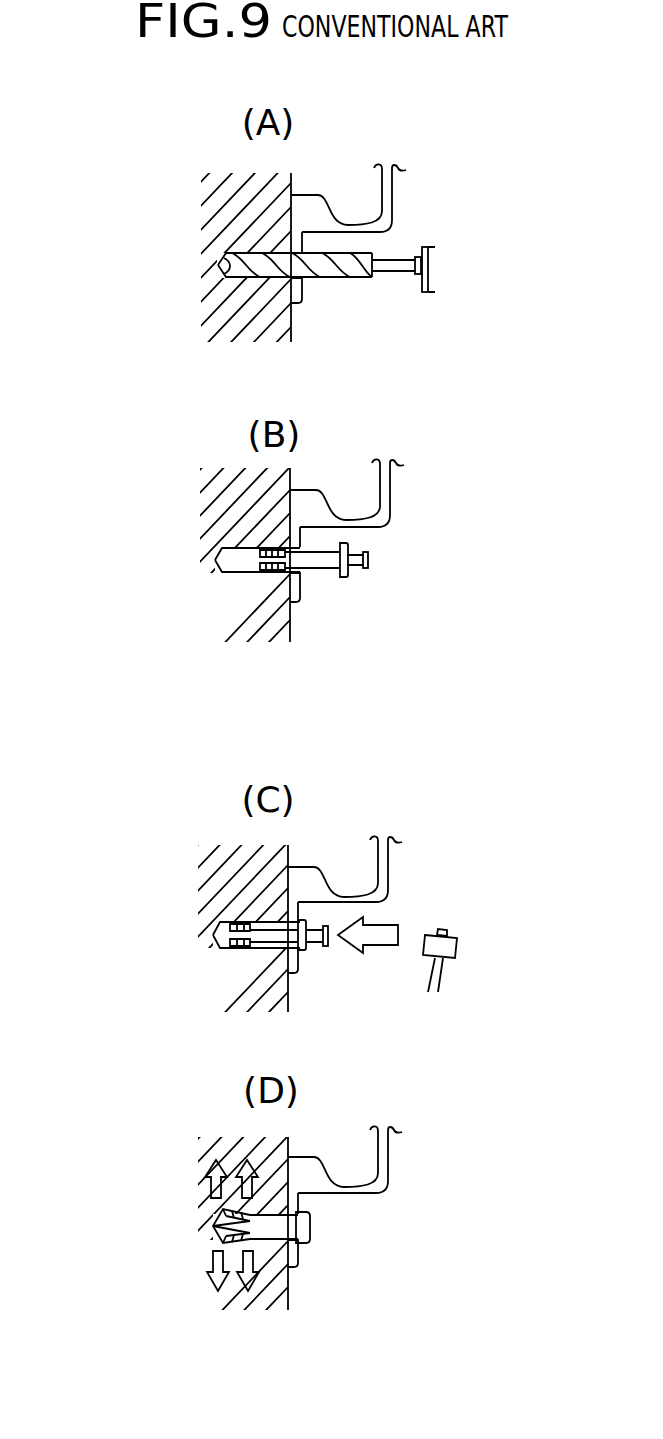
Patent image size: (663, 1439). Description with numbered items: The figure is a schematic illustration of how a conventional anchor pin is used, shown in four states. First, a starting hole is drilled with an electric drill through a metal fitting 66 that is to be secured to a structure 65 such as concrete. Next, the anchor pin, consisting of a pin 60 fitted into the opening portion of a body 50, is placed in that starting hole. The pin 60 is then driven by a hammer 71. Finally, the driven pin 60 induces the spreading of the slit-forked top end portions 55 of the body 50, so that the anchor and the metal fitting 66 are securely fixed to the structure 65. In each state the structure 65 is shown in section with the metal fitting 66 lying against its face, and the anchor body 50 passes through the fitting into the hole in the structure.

The body 50 is at (320, 567).
The slit-forked top end portions 55 is at (222, 1209).
The pin 60 is at (368, 562).
The structure 65 is at (242, 223).
The metal fitting 66 is at (392, 220).
The hammer 71 is at (443, 943).